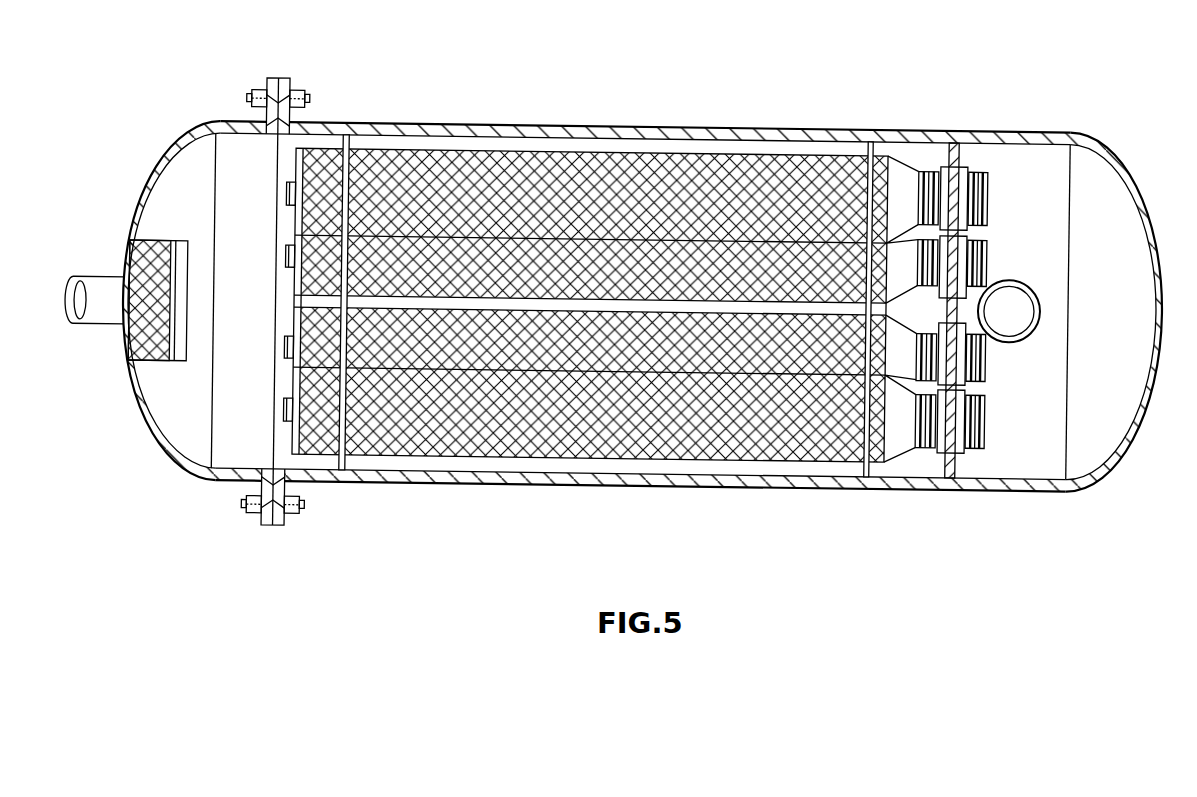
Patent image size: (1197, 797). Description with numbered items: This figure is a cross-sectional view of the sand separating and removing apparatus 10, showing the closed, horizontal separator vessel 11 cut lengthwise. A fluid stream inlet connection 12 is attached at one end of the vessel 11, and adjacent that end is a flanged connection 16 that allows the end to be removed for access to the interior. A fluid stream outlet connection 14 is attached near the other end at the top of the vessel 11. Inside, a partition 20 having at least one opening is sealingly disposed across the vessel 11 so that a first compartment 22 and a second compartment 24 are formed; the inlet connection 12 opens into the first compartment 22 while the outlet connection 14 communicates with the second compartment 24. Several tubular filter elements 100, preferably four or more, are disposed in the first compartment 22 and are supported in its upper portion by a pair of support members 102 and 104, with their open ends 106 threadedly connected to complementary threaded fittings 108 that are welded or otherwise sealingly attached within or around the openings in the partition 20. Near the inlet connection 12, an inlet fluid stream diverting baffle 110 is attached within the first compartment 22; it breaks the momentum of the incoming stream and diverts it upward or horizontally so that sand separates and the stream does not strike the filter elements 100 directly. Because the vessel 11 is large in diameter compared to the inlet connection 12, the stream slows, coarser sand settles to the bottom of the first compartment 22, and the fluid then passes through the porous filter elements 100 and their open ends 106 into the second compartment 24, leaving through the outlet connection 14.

The apparatus for separating and removing sand 10 is at (595, 298).
The separator vessel 11 is at (482, 127).
The fluid stream inlet connection 12 is at (90, 280).
The fluid stream outlet connection 14 is at (1040, 300).
The flanged connection 16 is at (275, 78).
The partition 20 is at (955, 465).
The first compartment 22 is at (230, 157).
The second compartment 24 is at (1108, 197).
The tubular filter elements 100 is at (313, 173).
The support member 102 is at (356, 470).
The support member 104 is at (884, 138).
The open ends of the tubular filter elements 106 is at (987, 190).
The threaded fittings 108 is at (962, 170).
The inlet fluid stream diverting baffle 110 is at (157, 240).